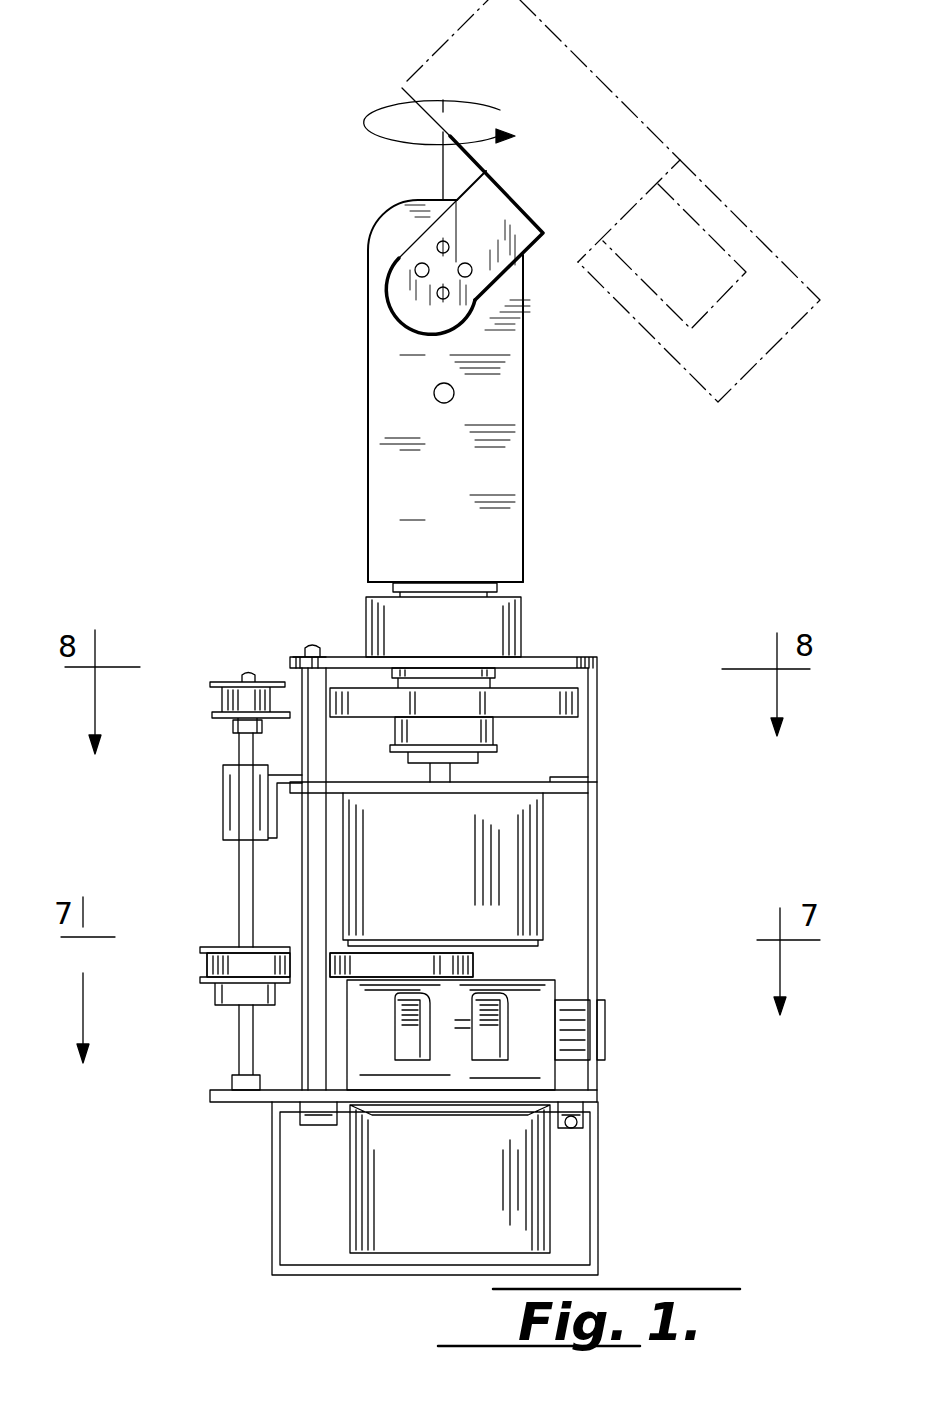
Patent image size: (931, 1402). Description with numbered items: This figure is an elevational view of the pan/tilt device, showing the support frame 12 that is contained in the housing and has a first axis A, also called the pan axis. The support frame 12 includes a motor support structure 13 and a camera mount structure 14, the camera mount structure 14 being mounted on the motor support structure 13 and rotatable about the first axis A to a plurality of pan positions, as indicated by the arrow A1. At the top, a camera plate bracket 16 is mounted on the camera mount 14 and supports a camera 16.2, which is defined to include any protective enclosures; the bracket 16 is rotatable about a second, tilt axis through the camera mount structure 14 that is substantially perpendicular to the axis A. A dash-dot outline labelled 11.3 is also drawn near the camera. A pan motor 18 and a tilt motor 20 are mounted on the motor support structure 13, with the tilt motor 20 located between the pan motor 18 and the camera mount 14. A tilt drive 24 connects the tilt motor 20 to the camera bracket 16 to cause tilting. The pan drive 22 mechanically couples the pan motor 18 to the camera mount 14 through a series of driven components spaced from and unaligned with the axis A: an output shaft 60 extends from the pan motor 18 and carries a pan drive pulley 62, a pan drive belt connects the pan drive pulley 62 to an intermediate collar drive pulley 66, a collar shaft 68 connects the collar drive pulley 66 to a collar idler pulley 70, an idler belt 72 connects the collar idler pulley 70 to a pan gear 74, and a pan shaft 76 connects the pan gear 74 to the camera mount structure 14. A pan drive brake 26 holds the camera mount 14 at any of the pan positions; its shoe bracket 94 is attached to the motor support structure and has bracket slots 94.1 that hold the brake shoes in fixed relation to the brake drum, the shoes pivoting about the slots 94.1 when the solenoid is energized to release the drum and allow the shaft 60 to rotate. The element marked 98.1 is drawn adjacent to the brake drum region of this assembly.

The first axis A is at (443, 165).
The arrow A1 is at (489, 108).
The workpiece holder position 11.3 is at (785, 256).
The support frame 12 is at (523, 503).
The motor support structure 13 is at (597, 807).
The camera mount structure 14 is at (523, 402).
The camera plate bracket 16 is at (527, 212).
The camera 16.2 is at (713, 189).
The pan motor 18 is at (520, 1197).
The tilt motor 20 is at (532, 870).
The pan drive 22 is at (200, 963).
The tilt drive 24 is at (455, 770).
The pan drive brake 26 is at (412, 1027).
The output shaft 60 is at (475, 965).
The pan drive pulley 62 is at (401, 965).
The intermediate collar drive pulley 66 is at (248, 965).
The collar shaft 68 is at (238, 883).
The collar idler pulley 70 is at (210, 703).
The idler belt 72 is at (300, 670).
The pan gear 74 is at (580, 702).
The pan shaft 76 is at (495, 598).
The shoe bracket 94 is at (540, 1005).
The bracket slots 94.1 is at (418, 1057).
The slot 98.1 is at (492, 1040).